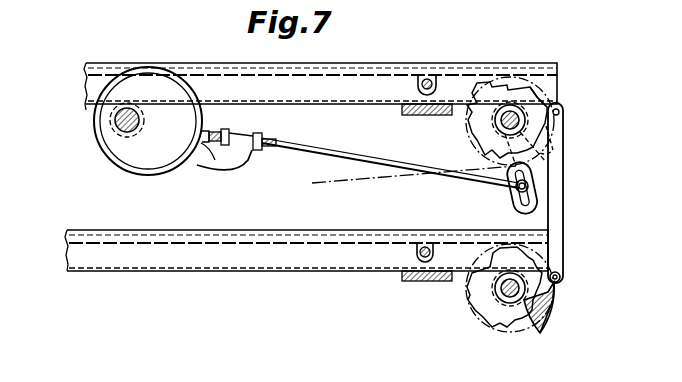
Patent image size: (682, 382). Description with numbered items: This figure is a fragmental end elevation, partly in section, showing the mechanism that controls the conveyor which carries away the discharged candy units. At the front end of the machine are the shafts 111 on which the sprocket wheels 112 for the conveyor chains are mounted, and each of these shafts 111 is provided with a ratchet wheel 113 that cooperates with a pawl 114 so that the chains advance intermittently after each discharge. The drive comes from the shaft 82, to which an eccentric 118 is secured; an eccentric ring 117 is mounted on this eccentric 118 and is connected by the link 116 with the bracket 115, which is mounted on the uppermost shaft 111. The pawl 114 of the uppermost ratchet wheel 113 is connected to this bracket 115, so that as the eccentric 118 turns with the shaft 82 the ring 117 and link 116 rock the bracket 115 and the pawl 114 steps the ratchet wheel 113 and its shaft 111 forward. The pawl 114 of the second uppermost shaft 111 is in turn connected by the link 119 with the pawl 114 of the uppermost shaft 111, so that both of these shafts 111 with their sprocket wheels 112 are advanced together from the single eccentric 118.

The shaft 82 is at (122, 126).
The shaft 111 is at (511, 116).
The sprocket wheel 112 is at (467, 123).
The ratchet wheel 113 is at (538, 93).
The pawl 114 is at (565, 130).
The bracket 115 is at (532, 170).
The link 116 is at (480, 180).
The eccentric ring 117 is at (170, 168).
The eccentric 118 is at (122, 152).
The link 119 is at (560, 195).